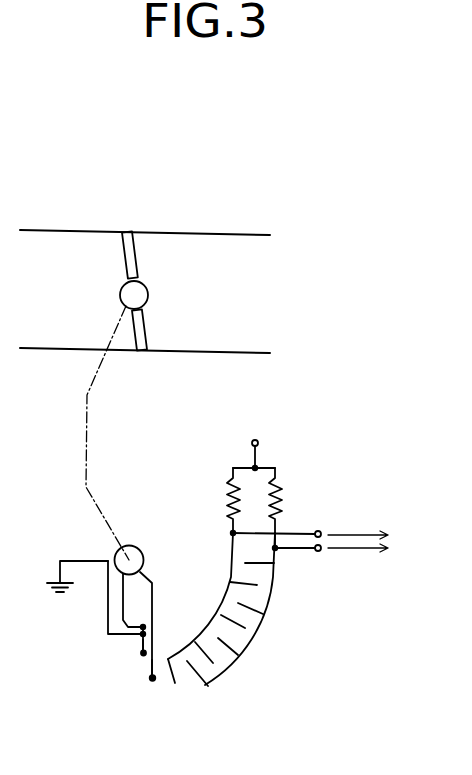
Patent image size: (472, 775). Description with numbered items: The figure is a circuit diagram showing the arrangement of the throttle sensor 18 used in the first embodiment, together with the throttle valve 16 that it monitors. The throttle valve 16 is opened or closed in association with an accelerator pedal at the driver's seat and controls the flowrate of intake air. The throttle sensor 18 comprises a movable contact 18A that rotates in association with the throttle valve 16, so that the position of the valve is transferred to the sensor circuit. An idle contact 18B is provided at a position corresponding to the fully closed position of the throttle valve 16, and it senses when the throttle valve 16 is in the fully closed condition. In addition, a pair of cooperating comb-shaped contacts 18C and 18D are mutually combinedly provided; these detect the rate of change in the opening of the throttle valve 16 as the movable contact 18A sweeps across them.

The throttle valve 16 is at (138, 268).
The throttle sensor 18 is at (172, 478).
The movable contact 18A is at (136, 657).
The idle contact 18B is at (146, 687).
The comb-shaped contact 18C is at (178, 689).
The comb-shaped contact 18D is at (203, 688).